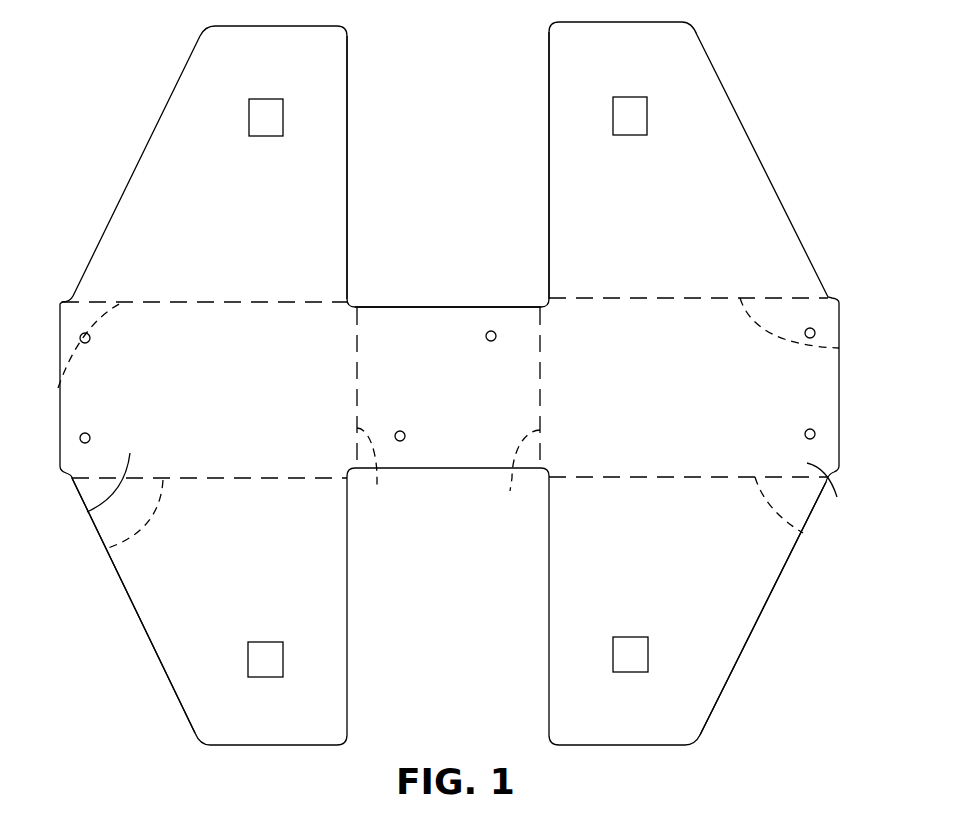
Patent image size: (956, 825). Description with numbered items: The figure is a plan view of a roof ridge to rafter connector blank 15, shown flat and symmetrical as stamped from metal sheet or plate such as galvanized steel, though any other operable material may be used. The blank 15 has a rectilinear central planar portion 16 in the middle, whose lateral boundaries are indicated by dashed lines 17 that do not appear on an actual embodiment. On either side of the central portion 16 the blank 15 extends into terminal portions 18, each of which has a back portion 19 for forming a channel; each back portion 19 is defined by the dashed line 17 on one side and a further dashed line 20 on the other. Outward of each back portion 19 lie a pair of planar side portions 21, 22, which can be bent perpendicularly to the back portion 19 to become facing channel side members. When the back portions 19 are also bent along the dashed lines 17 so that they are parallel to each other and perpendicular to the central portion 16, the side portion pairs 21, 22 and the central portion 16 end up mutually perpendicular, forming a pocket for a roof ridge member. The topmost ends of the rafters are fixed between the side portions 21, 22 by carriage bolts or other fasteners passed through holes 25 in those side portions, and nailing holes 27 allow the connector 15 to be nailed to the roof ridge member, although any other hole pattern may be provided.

The roof ridge to rafter connector blank 15 is at (529, 208).
The rectilinear central planar portion 16 is at (446, 318).
The dashed line 17 is at (520, 407).
The terminal portion 18 is at (648, 290).
The back portion 19 is at (837, 497).
The dashed line 20 is at (839, 348).
The planar side portion 21 is at (561, 272).
The planar side portion 22 is at (745, 620).
The hole 25 is at (632, 118).
The nailing hole 27 is at (815, 333).